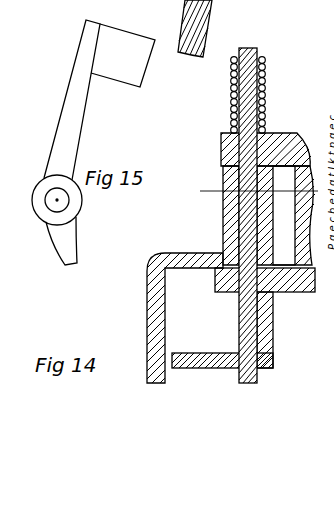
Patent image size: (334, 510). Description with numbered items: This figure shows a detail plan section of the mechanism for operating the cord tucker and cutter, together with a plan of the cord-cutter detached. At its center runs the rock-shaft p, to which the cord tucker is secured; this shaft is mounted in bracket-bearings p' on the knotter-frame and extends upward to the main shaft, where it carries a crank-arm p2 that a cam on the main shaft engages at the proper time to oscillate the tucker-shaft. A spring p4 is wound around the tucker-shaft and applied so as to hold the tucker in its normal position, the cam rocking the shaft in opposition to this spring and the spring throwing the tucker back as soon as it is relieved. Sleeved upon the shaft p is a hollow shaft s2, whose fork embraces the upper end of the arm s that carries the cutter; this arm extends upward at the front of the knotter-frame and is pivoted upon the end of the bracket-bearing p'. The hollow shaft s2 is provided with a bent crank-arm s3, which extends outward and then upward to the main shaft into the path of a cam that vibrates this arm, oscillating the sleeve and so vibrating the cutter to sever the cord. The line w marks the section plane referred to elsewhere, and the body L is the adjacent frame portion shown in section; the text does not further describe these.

In FIG. 15, the arm s is at (93, 142).
In FIG. 14, the arm s is at (195, 28).
In FIG. 14, the rock-shaft p is at (248, 216).
In FIG. 14, the bracket-bearing p' is at (250, 214).
In FIG. 14, the crank-arm p2 is at (214, 353).
In FIG. 14, the spring p4 is at (230, 99).
In FIG. 14, the hollow shaft s2 is at (223, 214).
In FIG. 14, the bent crank-arm s3 is at (147, 314).
In FIG. 14, the center line w is at (256, 192).
In FIG. 14, the frame L is at (305, 224).